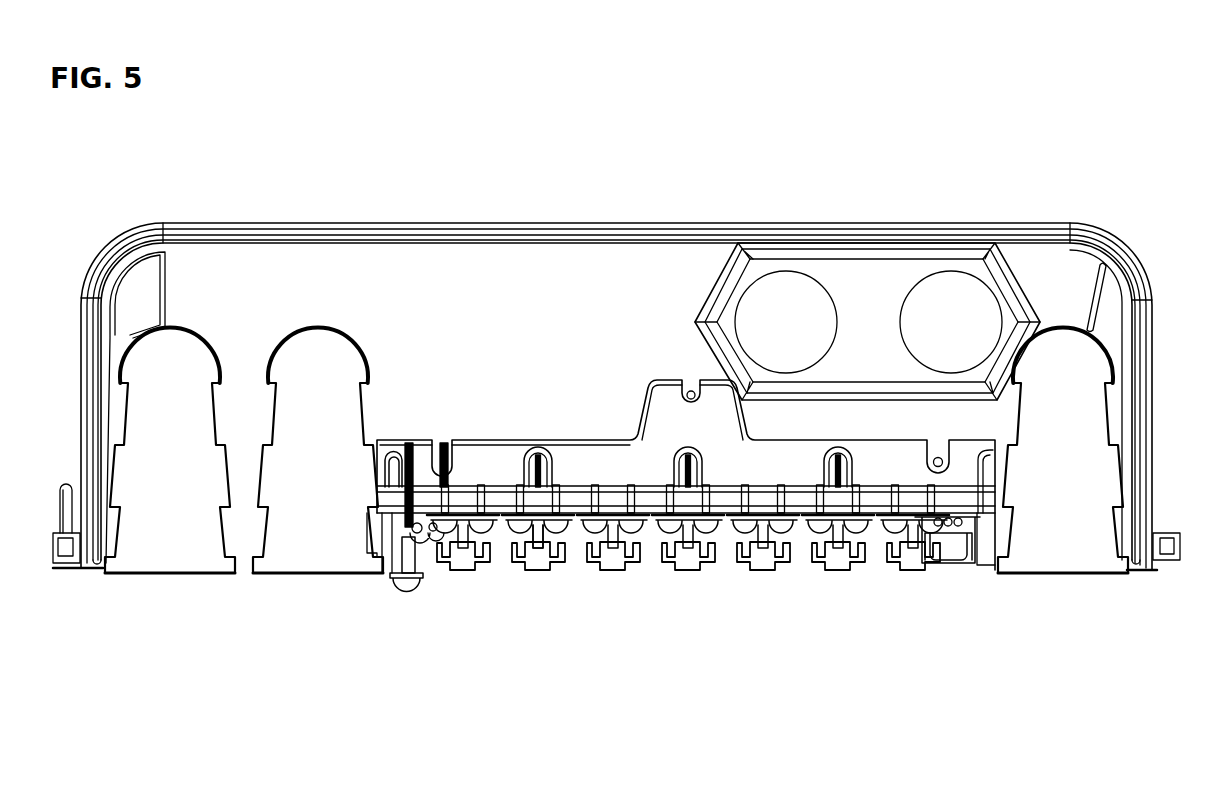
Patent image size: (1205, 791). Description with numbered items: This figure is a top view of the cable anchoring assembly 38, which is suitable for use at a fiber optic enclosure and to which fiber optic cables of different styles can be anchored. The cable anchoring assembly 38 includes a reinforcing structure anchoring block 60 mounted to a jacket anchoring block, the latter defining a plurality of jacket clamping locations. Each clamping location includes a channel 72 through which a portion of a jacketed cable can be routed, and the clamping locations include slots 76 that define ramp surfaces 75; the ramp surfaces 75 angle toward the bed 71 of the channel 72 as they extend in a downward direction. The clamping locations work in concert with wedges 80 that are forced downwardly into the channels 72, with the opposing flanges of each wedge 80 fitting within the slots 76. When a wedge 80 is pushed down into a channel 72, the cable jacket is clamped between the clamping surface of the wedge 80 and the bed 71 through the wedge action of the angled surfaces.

The cable anchoring assembly 38 is at (318, 220).
The reinforcing structure anchoring block 60 is at (681, 497).
The bed 71 is at (727, 520).
The channel 72 is at (503, 536).
The ramp surface 75 is at (597, 562).
The slot 76 is at (597, 562).
The wedge 80 is at (946, 562).